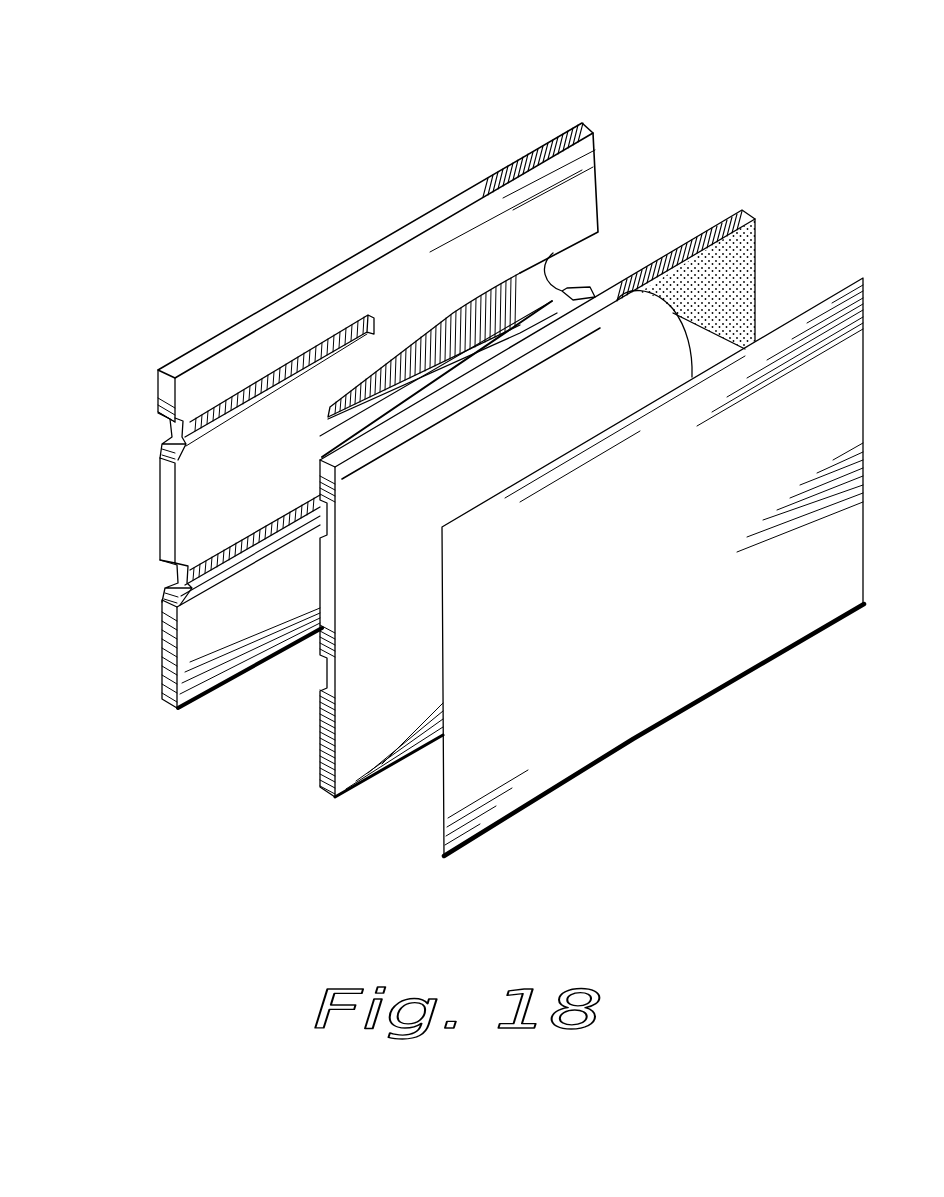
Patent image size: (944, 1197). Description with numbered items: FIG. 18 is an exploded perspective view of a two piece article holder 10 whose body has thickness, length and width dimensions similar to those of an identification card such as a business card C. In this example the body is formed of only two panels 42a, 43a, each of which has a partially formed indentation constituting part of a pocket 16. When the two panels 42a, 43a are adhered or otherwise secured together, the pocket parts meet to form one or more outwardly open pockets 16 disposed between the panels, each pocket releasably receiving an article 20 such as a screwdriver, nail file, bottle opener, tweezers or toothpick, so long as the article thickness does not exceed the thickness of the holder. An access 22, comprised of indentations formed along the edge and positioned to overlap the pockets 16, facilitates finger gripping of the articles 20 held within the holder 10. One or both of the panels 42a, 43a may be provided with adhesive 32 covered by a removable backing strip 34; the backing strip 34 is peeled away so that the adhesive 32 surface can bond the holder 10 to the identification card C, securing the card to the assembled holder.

The article holder 10 is at (758, 98).
The pocket 16 is at (248, 575).
The articles 20 is at (338, 363).
The access 22 is at (560, 272).
The adhesive 32 is at (733, 280).
The removable backing strip 34 is at (700, 343).
The panel 42a is at (323, 773).
The panel 43a is at (200, 622).
The identification card C is at (582, 470).